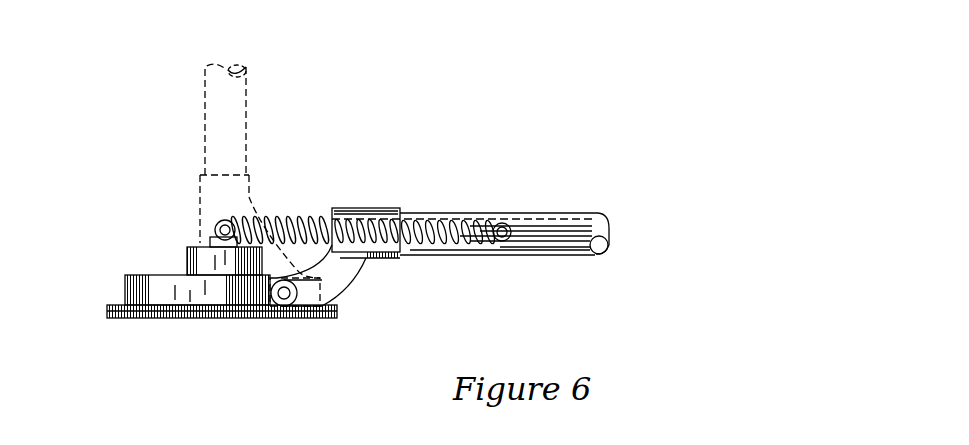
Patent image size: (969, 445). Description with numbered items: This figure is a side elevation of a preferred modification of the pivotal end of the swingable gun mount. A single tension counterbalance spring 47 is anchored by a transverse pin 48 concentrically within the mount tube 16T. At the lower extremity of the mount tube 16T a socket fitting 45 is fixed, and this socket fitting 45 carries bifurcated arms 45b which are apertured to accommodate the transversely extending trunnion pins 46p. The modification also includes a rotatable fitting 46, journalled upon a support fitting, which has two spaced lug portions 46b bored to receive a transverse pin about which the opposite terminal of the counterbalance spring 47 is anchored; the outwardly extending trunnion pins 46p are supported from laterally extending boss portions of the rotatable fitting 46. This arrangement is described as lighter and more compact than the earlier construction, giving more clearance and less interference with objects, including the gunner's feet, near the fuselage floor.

The mount tube 16T is at (543, 228).
The socket fitting 45 is at (368, 214).
The bifurcated arms 45b is at (347, 270).
The rotatable fitting 46 is at (143, 297).
The lug portions 46b is at (200, 244).
The trunnion pins 46p is at (290, 300).
The tension counterbalance spring 47 is at (296, 214).
The transverse pin 48 is at (506, 240).